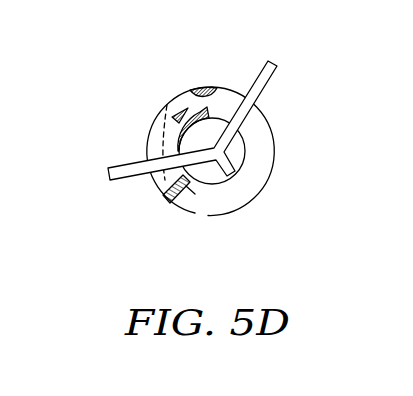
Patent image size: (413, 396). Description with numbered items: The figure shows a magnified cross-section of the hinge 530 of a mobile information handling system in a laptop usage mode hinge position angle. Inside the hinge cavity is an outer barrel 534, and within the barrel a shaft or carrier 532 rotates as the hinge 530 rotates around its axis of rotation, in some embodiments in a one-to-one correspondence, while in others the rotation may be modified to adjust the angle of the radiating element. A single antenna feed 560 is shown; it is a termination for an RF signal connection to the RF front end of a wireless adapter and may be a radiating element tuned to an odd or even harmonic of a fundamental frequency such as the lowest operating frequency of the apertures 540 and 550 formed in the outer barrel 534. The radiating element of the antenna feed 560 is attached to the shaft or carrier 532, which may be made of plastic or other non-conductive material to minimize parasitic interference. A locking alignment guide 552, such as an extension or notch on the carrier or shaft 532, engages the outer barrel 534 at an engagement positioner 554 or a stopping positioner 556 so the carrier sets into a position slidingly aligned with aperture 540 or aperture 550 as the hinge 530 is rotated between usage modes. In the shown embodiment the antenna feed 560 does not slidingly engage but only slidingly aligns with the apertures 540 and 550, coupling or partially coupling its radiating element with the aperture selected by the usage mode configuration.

The hinge 530 is at (278, 58).
The shaft or carrier 532 is at (244, 143).
The outer barrel 534 is at (270, 184).
The aperture 540 is at (208, 141).
The aperture 550 is at (200, 220).
The locking alignment guide 552 is at (206, 112).
The engagement positioner 554 is at (203, 86).
The stopping positioner 556 is at (163, 197).
The antenna feed 560 is at (177, 142).